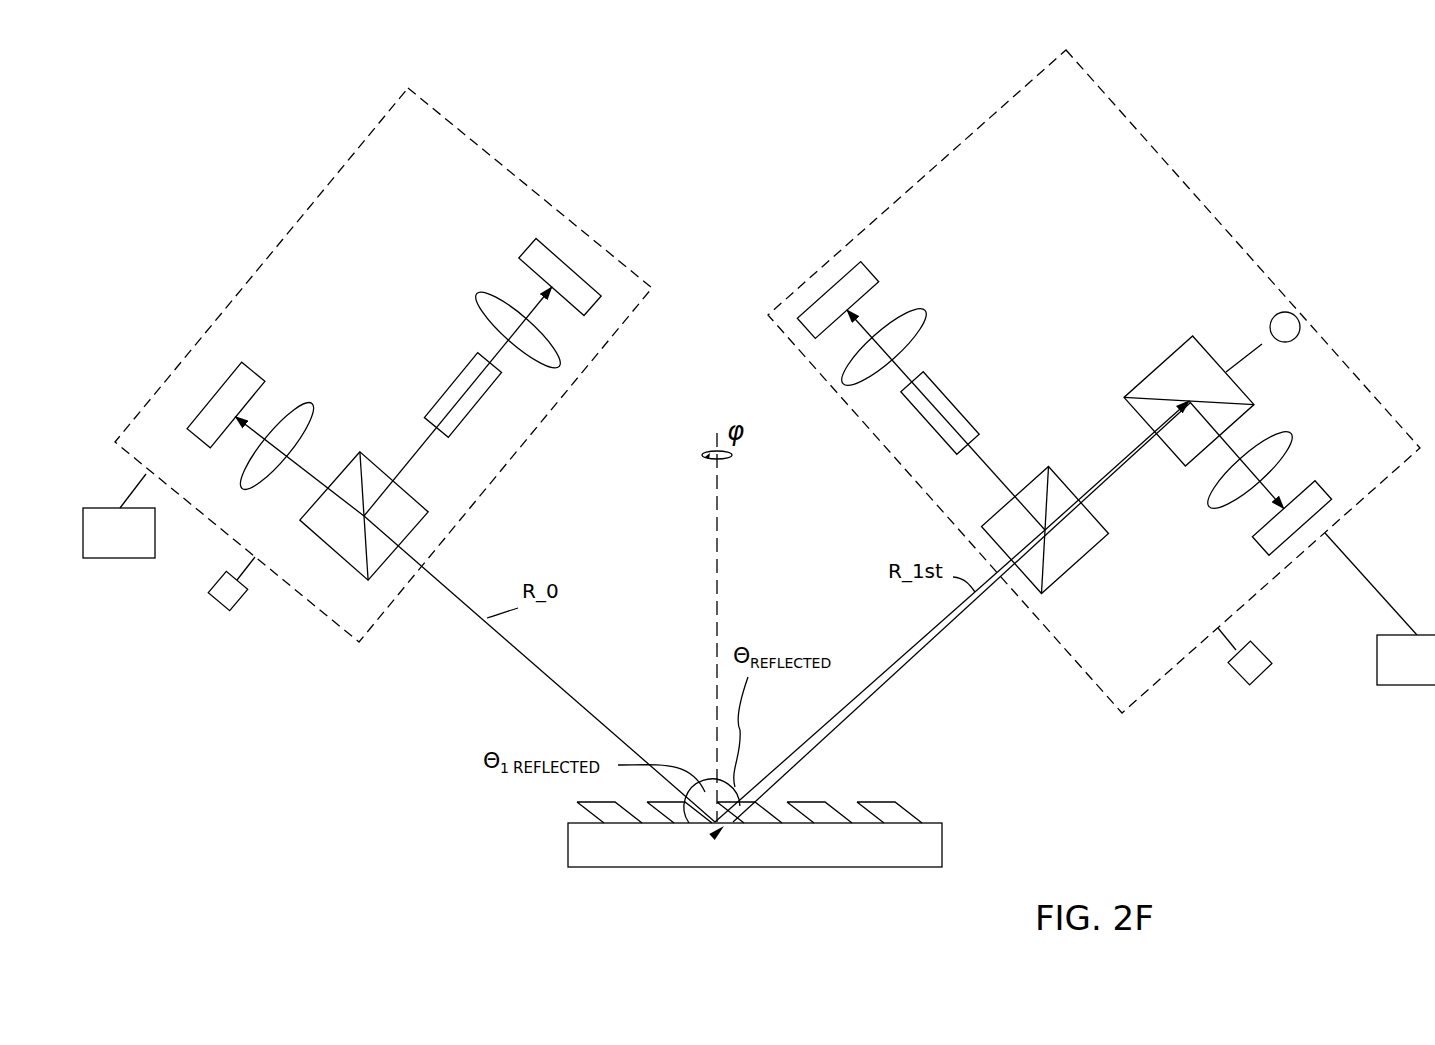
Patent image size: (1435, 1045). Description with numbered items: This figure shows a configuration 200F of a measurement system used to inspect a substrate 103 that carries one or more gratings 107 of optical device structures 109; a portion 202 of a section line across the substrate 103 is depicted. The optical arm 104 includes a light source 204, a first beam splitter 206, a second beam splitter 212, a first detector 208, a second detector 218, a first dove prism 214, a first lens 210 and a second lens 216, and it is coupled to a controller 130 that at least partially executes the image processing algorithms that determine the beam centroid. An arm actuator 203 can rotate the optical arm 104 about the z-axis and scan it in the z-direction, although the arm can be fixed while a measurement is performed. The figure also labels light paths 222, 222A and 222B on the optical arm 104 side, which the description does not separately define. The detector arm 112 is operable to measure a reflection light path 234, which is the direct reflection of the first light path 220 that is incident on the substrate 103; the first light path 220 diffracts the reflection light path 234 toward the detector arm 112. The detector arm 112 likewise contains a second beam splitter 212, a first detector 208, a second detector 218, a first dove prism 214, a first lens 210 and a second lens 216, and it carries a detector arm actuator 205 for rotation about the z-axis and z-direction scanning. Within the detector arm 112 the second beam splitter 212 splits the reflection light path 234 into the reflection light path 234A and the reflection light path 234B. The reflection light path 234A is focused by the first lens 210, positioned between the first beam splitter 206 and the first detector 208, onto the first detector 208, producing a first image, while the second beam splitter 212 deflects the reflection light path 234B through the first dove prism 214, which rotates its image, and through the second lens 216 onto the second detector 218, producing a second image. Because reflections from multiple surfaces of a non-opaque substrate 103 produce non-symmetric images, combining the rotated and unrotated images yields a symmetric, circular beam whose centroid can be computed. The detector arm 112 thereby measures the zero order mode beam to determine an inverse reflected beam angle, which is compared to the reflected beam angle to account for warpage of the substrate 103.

The configuration 200F is at (1310, 102).
The detector arm 112 is at (505, 170).
The optical arm 104 is at (1200, 197).
The controller 130 is at (138, 550).
The detector arm actuator 205 is at (240, 598).
The arm actuator 203 is at (1237, 672).
The second beam splitter 212 is at (428, 512).
The first dove prism 214 is at (480, 357).
The second lens 216 is at (478, 292).
The second detector 218 is at (522, 242).
The first lens 210 is at (310, 404).
The first detector 208 is at (257, 370).
The first beam splitter 206 is at (1177, 353).
The light source 204 is at (1300, 326).
The reflection light path 234 is at (543, 667).
The reflection light path 234A is at (307, 467).
The reflection light path 234B is at (520, 373).
The first order reflected beam 222 is at (923, 637).
The transmitted portion of first order beam 222A is at (1128, 447).
The reflected portion of first order beam 222B is at (983, 463).
The first light path 220 is at (1125, 467).
The optical device structures 109 is at (815, 803).
The gratings 107 is at (795, 868).
The substrate 103 is at (788, 828).
The portion of section line 202 is at (595, 887).